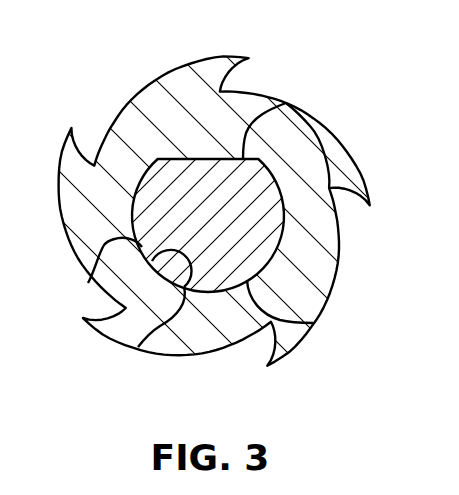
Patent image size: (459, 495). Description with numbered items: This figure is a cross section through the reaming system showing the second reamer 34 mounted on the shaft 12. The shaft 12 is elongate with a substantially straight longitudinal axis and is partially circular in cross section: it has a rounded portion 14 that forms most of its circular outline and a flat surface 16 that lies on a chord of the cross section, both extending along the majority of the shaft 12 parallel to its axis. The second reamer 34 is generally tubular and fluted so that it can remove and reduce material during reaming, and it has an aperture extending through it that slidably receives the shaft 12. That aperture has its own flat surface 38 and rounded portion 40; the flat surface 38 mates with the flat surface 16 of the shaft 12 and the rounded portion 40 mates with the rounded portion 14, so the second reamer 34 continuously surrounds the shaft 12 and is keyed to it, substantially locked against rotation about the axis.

The shaft 12 is at (223, 223).
The rounded portion 14 is at (313, 323).
The flat surface 16 is at (286, 103).
The second reamer 34 is at (148, 107).
The flat surface 38 is at (88, 283).
The rounded portion 40 is at (138, 347).